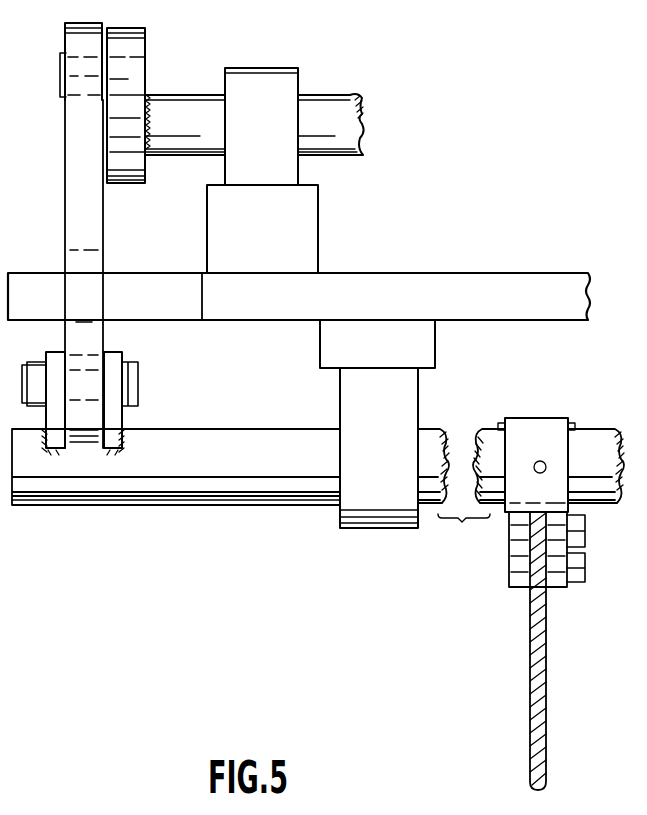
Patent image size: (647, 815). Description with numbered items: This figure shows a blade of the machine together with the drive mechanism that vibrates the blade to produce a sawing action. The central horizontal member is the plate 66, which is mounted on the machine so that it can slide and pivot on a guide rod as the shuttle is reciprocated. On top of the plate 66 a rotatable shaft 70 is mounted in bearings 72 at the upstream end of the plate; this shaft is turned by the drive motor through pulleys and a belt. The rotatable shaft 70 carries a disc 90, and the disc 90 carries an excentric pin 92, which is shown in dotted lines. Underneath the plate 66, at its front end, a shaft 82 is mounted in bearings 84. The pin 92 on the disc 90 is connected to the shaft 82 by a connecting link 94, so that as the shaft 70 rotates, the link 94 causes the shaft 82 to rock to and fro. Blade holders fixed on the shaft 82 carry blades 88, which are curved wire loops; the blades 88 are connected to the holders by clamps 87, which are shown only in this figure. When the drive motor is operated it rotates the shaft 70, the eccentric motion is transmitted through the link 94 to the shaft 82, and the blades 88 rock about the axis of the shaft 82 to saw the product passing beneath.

The plate 66 is at (424, 282).
The rotatable shaft 70 is at (321, 102).
The bearings 72 is at (267, 71).
The shaft 82 is at (276, 438).
The bearings 84 is at (375, 503).
The clamps 87 is at (516, 545).
The blades 88 is at (534, 672).
The disc 90 is at (146, 41).
The excentric pin 92 is at (62, 75).
The connecting link 94 is at (76, 250).